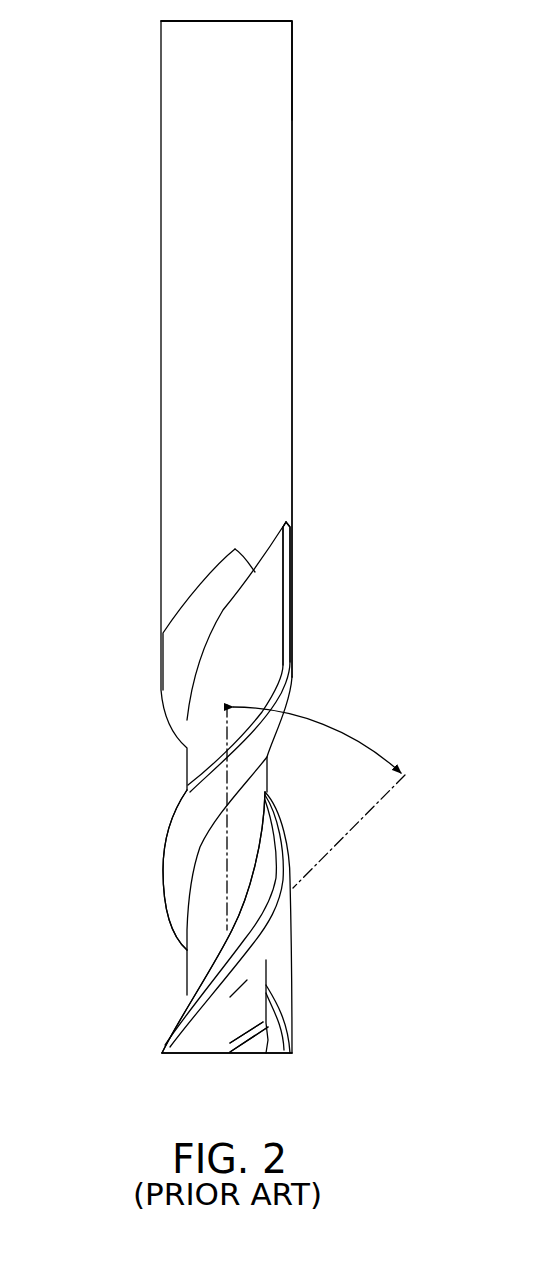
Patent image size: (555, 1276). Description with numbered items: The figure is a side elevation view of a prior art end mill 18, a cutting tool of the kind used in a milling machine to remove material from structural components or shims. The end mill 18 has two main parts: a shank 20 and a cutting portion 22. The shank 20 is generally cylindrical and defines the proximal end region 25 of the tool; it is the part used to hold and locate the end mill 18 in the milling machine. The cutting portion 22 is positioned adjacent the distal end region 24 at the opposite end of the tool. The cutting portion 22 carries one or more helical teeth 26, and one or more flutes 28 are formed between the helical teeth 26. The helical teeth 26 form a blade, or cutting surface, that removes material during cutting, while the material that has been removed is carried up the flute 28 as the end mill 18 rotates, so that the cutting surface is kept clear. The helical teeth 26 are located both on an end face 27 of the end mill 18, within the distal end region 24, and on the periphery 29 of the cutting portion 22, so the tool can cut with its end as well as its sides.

The end mill 18 is at (409, 233).
The shank 20 is at (247, 303).
The cutting portion 22 is at (378, 523).
The distal end region 24 is at (126, 1062).
The proximal end region 25 is at (106, 102).
The helical teeth 26 is at (250, 743).
The end face 27 is at (260, 1053).
The flutes 28 is at (163, 757).
The periphery 29 is at (293, 637).